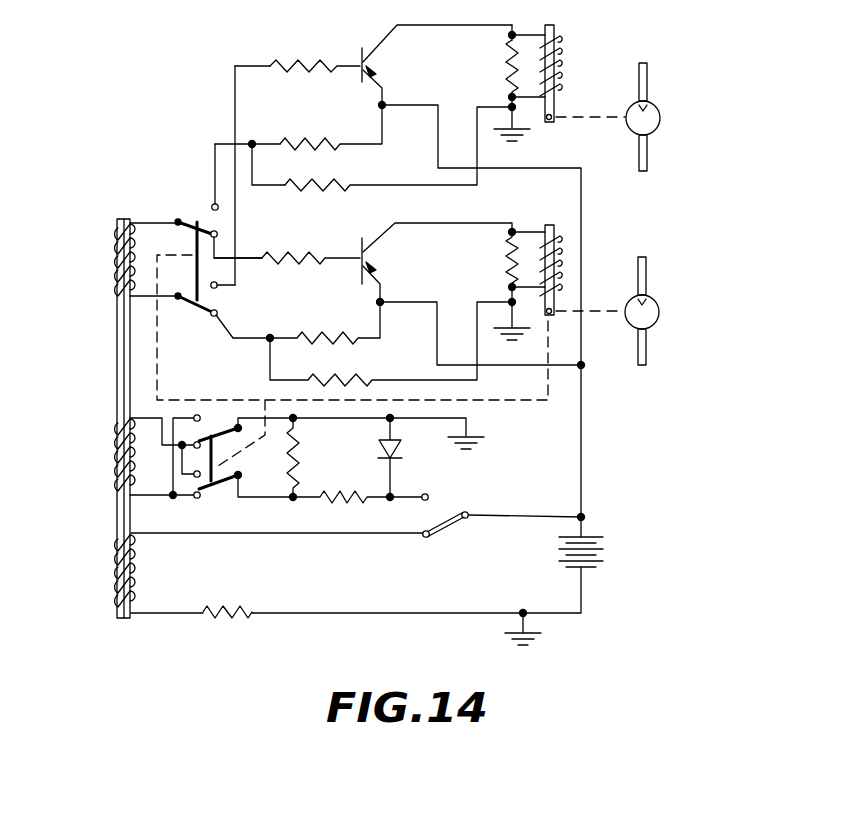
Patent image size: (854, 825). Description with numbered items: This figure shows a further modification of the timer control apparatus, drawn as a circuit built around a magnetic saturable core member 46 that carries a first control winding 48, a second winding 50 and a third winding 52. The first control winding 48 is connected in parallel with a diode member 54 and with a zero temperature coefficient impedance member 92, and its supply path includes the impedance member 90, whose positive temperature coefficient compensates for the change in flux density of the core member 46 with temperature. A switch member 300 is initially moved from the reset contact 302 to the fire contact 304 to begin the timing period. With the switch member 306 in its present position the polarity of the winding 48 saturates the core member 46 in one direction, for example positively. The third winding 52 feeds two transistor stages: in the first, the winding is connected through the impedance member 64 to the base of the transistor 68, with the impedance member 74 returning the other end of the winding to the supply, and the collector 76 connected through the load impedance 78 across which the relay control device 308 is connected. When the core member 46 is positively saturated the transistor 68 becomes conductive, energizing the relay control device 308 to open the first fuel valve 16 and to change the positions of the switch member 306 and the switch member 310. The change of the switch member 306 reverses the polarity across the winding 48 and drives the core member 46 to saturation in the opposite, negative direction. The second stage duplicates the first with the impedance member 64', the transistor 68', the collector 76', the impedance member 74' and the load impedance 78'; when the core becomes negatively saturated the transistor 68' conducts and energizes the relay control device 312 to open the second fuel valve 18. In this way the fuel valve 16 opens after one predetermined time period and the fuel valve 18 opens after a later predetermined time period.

The impedance member 64' is at (297, 41).
The transistor 68' is at (437, 65).
The load impedance 78' is at (490, 83).
The relay control device 312 is at (553, 30).
The second control valve 18 is at (661, 115).
The collector 76' is at (298, 127).
The impedance member 74' is at (382, 149).
The third winding 52 is at (110, 250).
The switch member 310 is at (192, 246).
The impedance member 64 is at (287, 241).
The transistor 68 is at (437, 262).
The load impedance 78 is at (491, 286).
The relay control device 308 is at (555, 225).
The first control valve 16 is at (660, 310).
The collector 76 is at (325, 323).
The impedance member 74 is at (391, 344).
The magnetic saturable core member 46 is at (117, 366).
The first control winding 48 is at (110, 468).
The switch member 306 is at (214, 471).
The impedance member 92 is at (299, 458).
The diode member 54 is at (400, 447).
The impedance member 90 is at (338, 493).
The fire contact 304 is at (430, 496).
The switch member 300 is at (438, 524).
The reset contact 302 is at (427, 539).
The second winding 50 is at (110, 560).